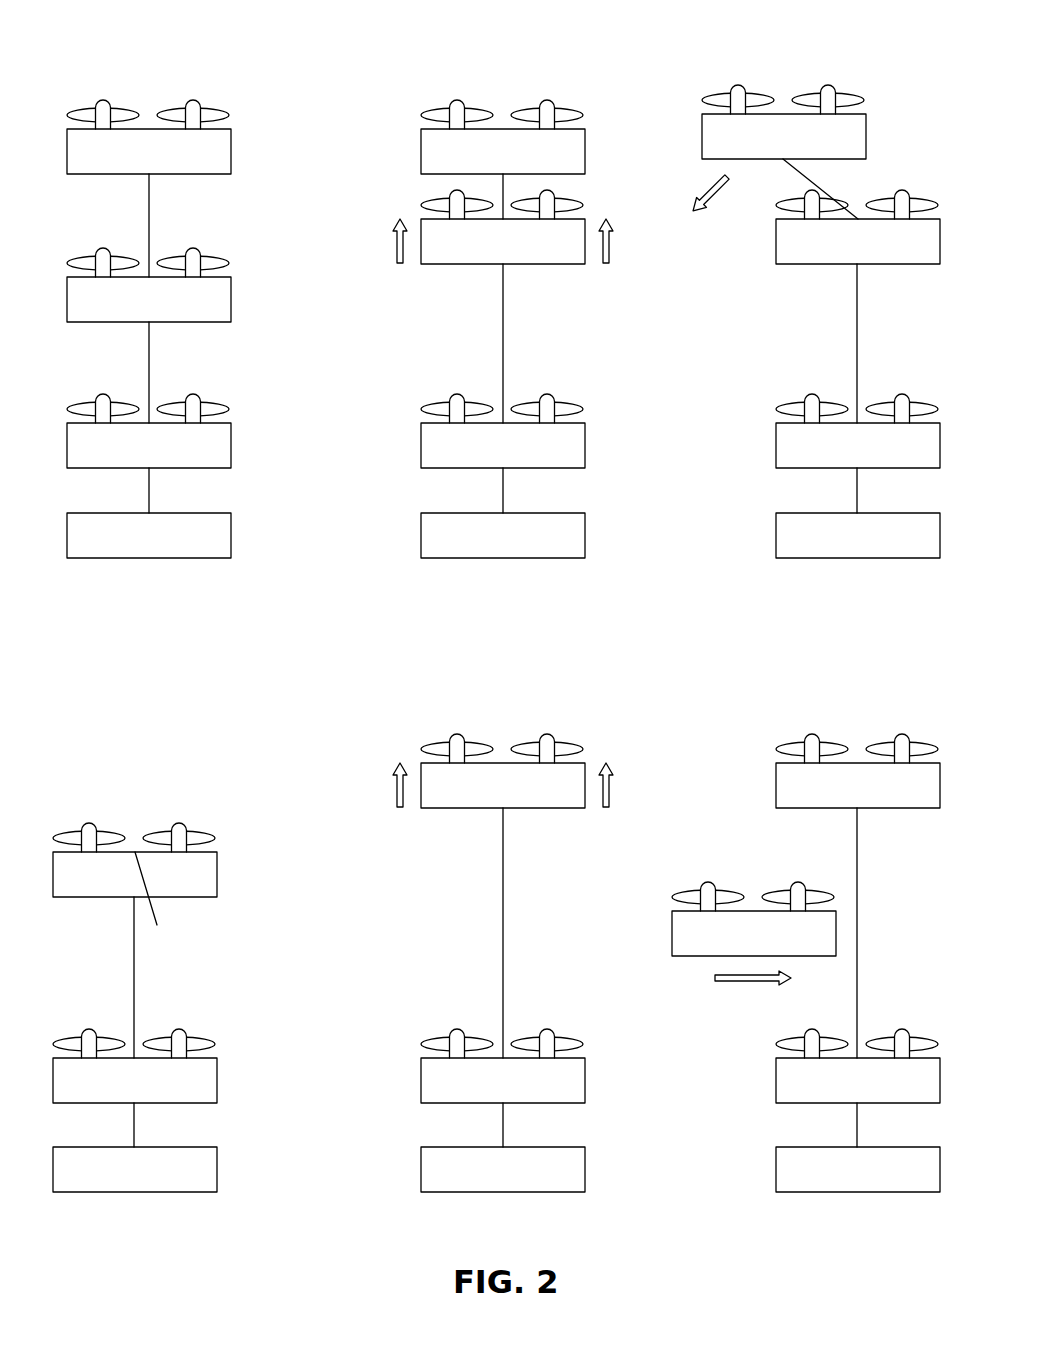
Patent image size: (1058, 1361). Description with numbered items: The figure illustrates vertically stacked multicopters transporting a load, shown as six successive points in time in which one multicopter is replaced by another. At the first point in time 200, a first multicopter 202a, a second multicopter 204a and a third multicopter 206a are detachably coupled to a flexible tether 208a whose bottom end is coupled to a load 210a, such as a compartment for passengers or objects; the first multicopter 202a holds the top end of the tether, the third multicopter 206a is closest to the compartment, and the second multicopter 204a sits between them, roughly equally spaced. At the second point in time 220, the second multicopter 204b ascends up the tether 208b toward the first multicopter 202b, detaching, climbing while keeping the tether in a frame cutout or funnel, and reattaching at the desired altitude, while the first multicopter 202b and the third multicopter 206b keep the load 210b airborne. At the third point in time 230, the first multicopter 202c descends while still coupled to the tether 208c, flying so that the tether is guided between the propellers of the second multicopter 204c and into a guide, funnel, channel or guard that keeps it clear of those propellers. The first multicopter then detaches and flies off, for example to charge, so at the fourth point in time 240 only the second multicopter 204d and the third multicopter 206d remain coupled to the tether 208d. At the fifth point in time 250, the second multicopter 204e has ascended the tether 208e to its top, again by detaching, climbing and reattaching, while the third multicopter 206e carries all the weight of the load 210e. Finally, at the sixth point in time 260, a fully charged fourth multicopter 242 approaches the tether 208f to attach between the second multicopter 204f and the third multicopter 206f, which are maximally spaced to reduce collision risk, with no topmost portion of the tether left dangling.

The first point in time 200 is at (195, 290).
The second point in time 220 is at (504, 290).
The third point in time 230 is at (826, 290).
The fourth point in time 240 is at (143, 924).
The fifth point in time 250 is at (539, 924).
The sixth point in time 260 is at (817, 924).
The first multicopter 202a is at (103, 103).
The first multicopter 202b is at (457, 103).
The first multicopter 202c is at (736, 88).
The second multicopter 204a is at (103, 249).
The second multicopter 204b is at (430, 207).
The second multicopter 204c is at (898, 189).
The second multicopter 204d is at (192, 808).
The second multicopter 204e is at (457, 734).
The second multicopter 204f is at (812, 734).
The third multicopter 206a is at (103, 395).
The third multicopter 206b is at (457, 393).
The third multicopter 206d is at (89, 1029).
The third multicopter 206e is at (457, 1029).
The third multicopter 206f is at (902, 1029).
The tether 208a is at (150, 226).
The tether 208b is at (504, 331).
The tether 208c is at (856, 343).
The tether 208d is at (135, 975).
The tether 208e is at (502, 920).
The tether 208f is at (858, 933).
The load 210a is at (232, 538).
The load 210b is at (586, 538).
The load 210e is at (586, 1170).
The fourth multicopter 242 is at (708, 882).